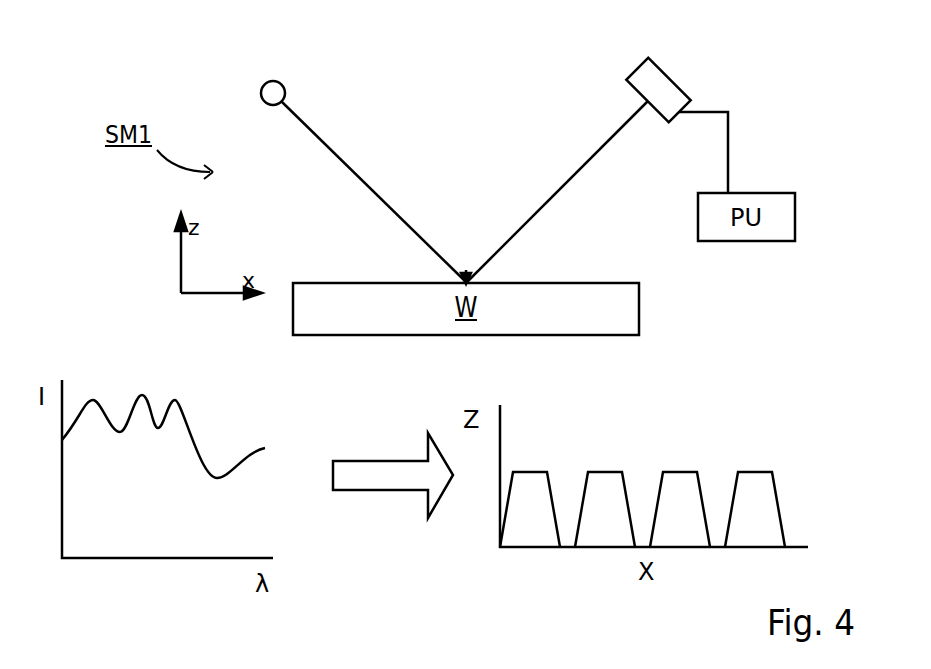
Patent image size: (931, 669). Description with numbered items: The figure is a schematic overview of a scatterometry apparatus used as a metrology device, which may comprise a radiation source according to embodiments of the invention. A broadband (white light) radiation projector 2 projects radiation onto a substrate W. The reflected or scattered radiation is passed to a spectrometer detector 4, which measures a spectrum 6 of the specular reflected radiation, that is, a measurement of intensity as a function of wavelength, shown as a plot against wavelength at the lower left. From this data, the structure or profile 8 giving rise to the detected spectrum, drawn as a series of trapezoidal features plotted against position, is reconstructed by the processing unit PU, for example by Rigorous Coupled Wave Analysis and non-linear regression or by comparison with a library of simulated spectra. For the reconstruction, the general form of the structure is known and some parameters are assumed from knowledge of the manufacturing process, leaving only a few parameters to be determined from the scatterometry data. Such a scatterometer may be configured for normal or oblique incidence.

The broadband radiation projector 2 is at (273, 81).
The spectrometer detector 4 is at (653, 83).
The spectrum 6 is at (226, 405).
The structure or profile 8 is at (710, 455).